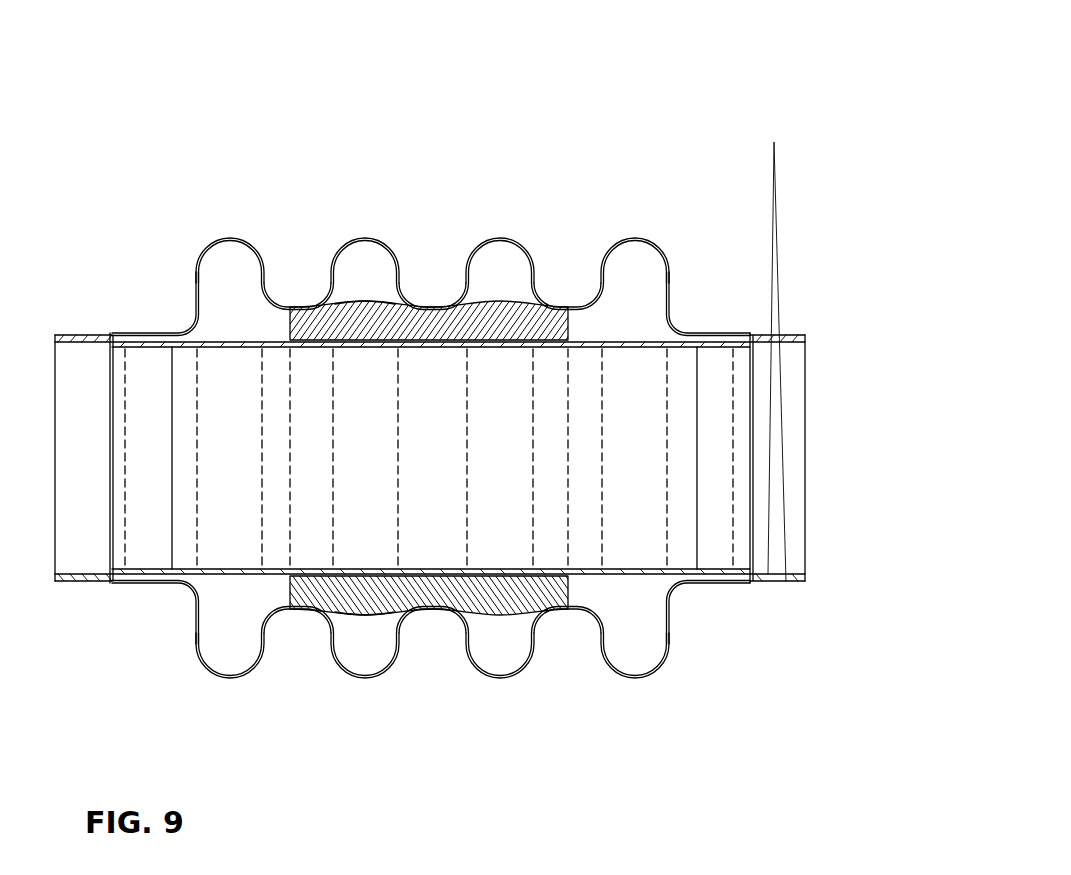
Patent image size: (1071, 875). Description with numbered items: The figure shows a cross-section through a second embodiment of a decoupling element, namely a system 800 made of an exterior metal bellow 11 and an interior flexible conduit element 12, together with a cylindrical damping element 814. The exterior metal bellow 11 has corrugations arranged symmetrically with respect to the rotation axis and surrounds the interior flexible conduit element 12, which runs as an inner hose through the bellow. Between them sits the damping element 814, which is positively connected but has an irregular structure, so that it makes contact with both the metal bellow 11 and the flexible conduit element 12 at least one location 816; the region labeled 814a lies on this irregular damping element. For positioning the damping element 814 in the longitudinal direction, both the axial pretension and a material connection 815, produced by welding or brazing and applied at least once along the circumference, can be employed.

The system 800 is at (663, 82).
The exterior metal bellow 11 is at (202, 248).
The interior flexible conduit element 12 is at (623, 345).
The damping element 814 is at (497, 295).
The convolution crest region 814a is at (372, 302).
The material connection 815 is at (316, 303).
The location 816 is at (433, 305).